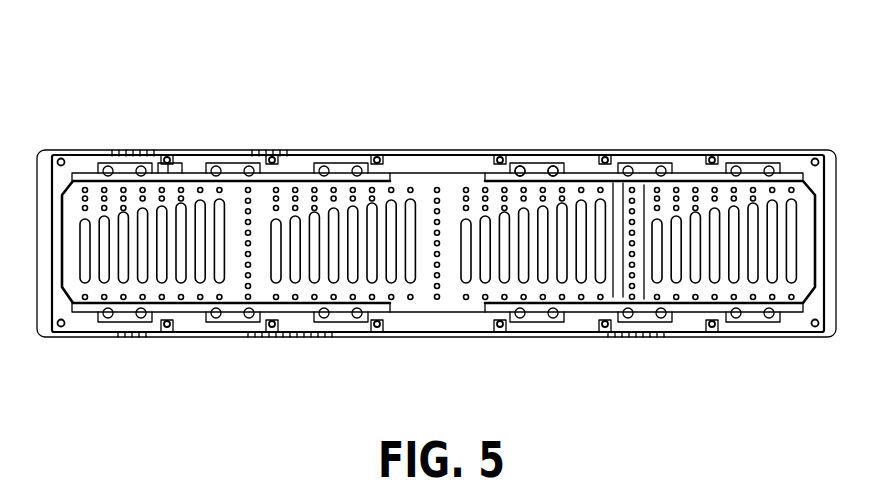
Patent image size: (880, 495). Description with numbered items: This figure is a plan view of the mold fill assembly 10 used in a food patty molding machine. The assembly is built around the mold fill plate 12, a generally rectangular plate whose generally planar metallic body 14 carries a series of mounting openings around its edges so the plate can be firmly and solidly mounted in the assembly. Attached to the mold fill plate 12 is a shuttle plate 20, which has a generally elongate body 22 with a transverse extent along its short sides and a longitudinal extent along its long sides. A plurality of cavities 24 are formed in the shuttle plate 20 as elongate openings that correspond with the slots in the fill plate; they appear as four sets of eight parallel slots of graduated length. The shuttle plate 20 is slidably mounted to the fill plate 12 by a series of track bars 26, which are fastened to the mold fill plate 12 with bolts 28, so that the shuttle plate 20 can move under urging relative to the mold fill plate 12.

The connector assembly 10 is at (662, 127).
The mold fill plate 12 is at (745, 348).
The generally planar metallic body 14 is at (185, 165).
The shuttle plate 20 is at (815, 172).
The generally elongate body 22 is at (451, 185).
The cavities 24 is at (577, 280).
The track bars 26 is at (292, 182).
The bolts 28 is at (548, 172).